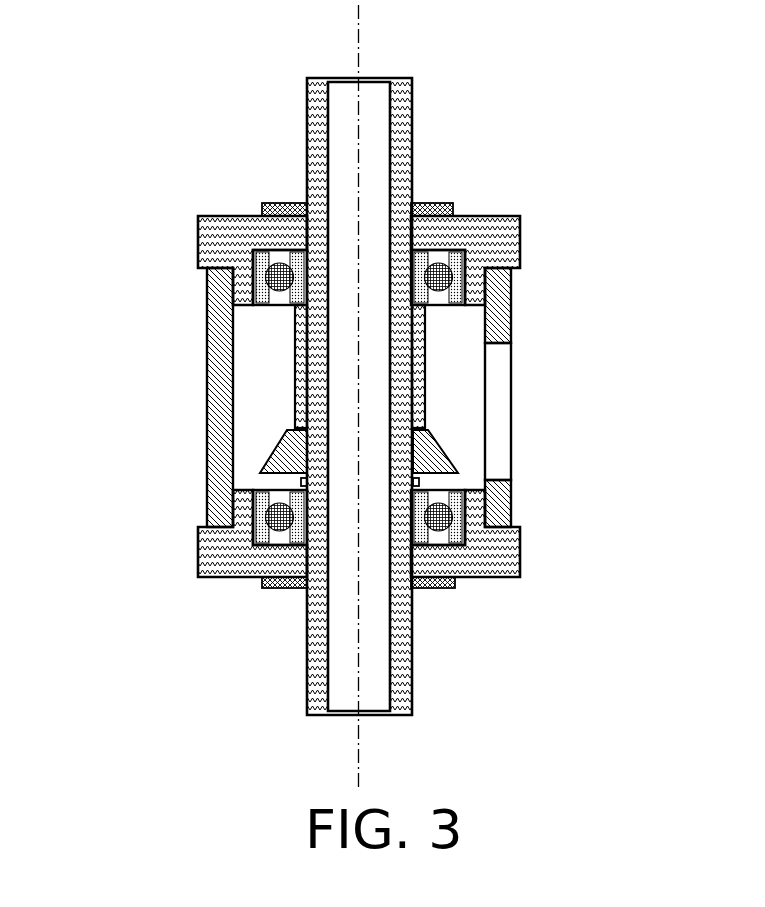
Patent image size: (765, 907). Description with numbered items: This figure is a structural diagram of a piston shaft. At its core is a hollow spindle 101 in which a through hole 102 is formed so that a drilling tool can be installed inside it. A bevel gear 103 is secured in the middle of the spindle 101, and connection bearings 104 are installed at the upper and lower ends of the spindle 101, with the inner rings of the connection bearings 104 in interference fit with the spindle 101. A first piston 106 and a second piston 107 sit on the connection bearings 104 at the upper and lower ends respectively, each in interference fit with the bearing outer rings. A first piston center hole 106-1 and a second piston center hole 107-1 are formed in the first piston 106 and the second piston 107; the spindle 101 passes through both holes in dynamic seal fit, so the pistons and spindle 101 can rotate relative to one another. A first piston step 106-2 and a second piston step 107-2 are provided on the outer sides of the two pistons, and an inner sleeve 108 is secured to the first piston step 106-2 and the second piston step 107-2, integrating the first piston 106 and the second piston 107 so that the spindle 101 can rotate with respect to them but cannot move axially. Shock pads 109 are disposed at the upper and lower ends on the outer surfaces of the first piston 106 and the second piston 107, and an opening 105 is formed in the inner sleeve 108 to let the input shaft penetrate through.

The hollow spindle 101 is at (408, 370).
The through hole 102 is at (372, 165).
The bevel gear 103 is at (285, 460).
The connection bearings 104 is at (278, 518).
The opening 105 is at (495, 415).
The first piston 106 is at (233, 243).
The first piston center hole 106-1 is at (453, 202).
The first piston step 106-2 is at (475, 283).
The second piston 107 is at (223, 558).
The second piston center hole 107-1 is at (455, 583).
The second piston step 107-2 is at (473, 513).
The inner sleeve 108 is at (217, 348).
The shock pads 109 is at (282, 203).